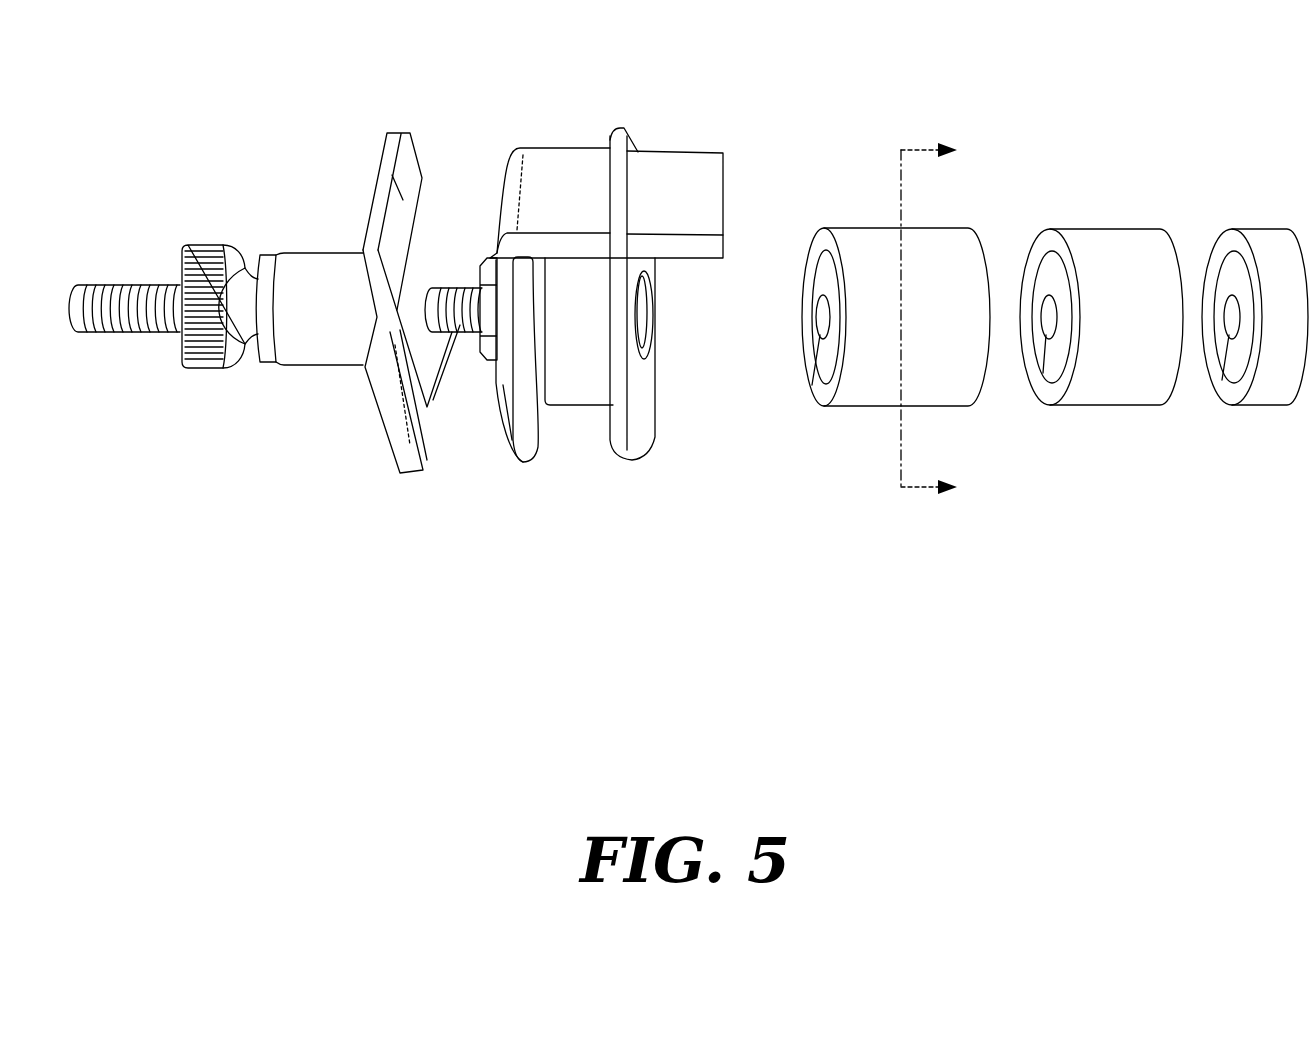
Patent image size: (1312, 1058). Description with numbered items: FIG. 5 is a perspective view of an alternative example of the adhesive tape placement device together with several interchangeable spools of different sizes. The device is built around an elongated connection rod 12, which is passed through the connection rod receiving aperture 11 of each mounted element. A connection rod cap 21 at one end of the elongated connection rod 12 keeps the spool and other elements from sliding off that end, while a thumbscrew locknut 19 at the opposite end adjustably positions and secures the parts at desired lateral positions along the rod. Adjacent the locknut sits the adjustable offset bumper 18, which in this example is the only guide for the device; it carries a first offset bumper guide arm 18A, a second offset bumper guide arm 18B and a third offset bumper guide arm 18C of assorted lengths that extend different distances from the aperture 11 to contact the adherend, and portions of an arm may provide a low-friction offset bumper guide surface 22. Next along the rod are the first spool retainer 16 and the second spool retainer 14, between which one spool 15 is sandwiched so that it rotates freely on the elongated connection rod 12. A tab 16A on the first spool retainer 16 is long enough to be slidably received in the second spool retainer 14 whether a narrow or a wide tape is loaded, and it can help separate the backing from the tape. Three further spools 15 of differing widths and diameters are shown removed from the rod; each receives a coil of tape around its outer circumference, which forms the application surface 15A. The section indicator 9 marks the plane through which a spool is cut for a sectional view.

The section view indicator 9 is at (945, 318).
The connection rod receiving aperture 11 is at (813, 388).
The elongated connection rod 12 is at (107, 333).
The second spool retainer 14 is at (636, 455).
The spool 15 is at (590, 430).
The application surface 15A is at (562, 353).
The first spool retainer 16 is at (520, 457).
The tab 16A is at (555, 148).
The adjustable offset bumper 18 is at (290, 242).
The first offset bumper guide arm 18A is at (377, 213).
The second offset bumper guide arm 18B is at (382, 392).
The third offset bumper guide arm 18C is at (437, 430).
The thumbscrew locknut 19 is at (190, 228).
The connection rod cap 21 is at (656, 380).
The offset bumper guide surface 22 is at (373, 162).